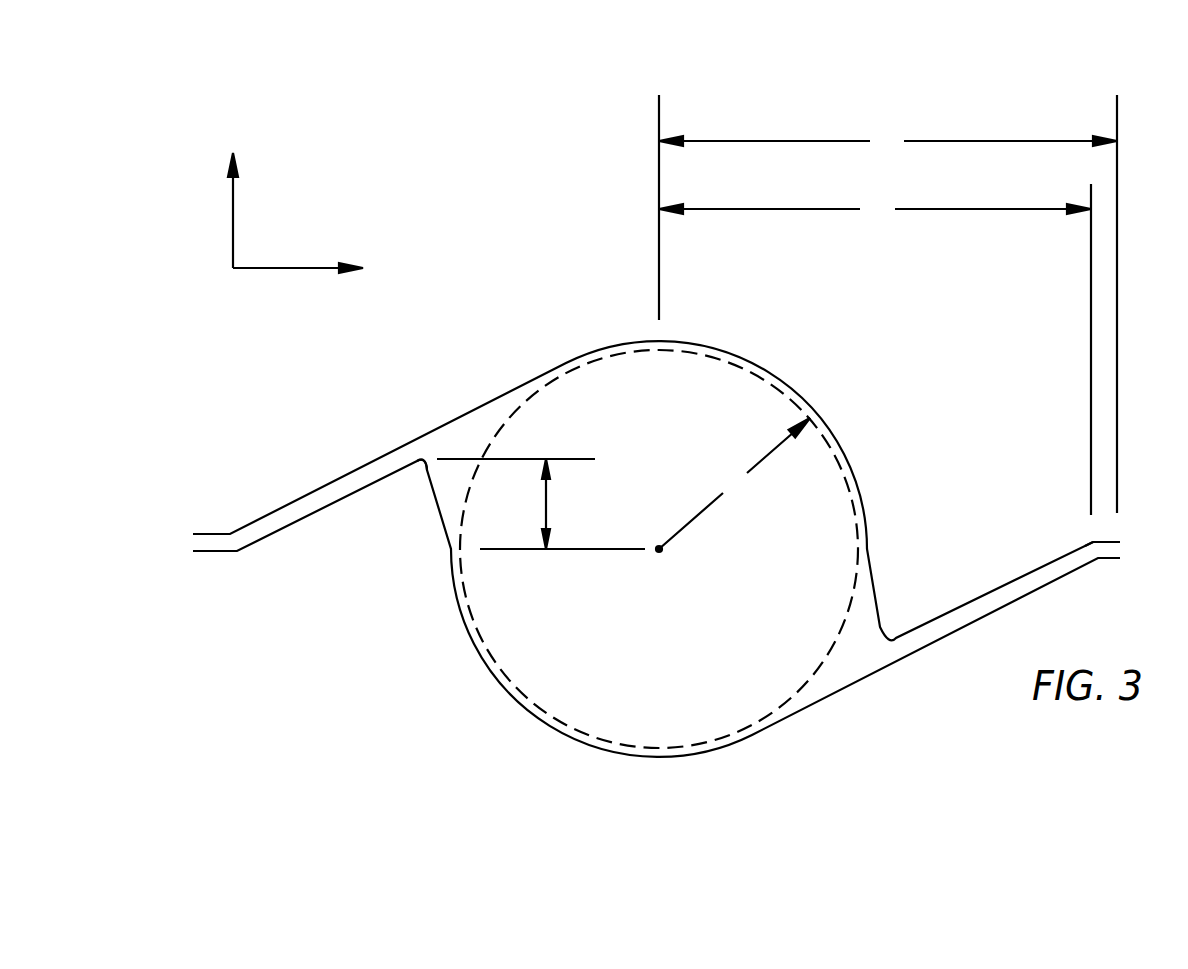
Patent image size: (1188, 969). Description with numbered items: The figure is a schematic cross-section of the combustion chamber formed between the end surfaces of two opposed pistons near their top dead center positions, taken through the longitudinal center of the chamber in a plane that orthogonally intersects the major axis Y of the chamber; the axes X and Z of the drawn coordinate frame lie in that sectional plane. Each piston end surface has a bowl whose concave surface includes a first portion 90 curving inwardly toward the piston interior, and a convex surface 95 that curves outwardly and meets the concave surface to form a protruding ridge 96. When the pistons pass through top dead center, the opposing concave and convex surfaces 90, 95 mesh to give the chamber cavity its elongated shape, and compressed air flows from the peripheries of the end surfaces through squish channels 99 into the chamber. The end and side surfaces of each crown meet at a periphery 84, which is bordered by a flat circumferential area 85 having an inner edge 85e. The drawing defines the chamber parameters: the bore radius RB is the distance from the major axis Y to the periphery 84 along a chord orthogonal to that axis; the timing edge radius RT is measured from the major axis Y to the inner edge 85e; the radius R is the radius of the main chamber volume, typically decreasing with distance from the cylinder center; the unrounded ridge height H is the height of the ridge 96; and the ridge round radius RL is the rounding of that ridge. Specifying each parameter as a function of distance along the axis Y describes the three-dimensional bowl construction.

The periphery 84 is at (1118, 538).
The circumferential area 85 is at (1113, 543).
The inner edge of the flat circumferential area 85e is at (1093, 542).
The first portion of the concave surface 90 is at (689, 549).
The convex surface 95 is at (250, 545).
The ridge 96 is at (418, 460).
The squish channels 99 is at (265, 525).
The ridge round radius RL is at (414, 493).
The radius of the main volume of the combustion chamber R is at (733, 485).
The unrounded ridge height H is at (541, 504).
The bore radius RB is at (888, 304).
The timing edge radius RT is at (875, 349).
The X axis X is at (313, 272).
The major axis of the combustion chamber Y is at (659, 549).
The Z axis Z is at (235, 198).